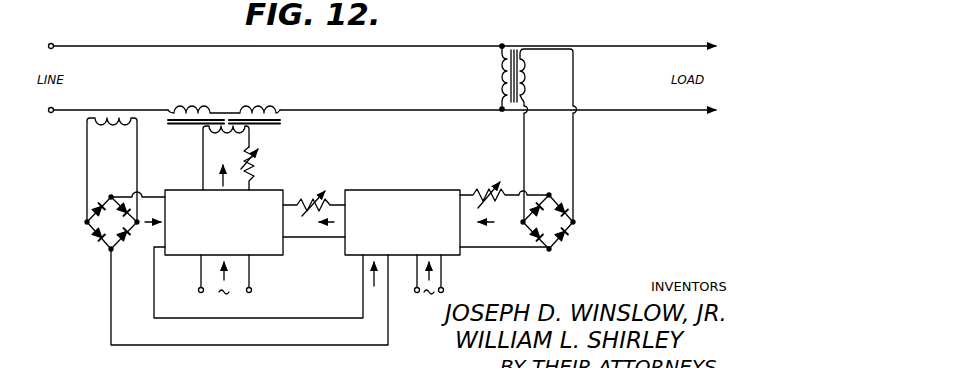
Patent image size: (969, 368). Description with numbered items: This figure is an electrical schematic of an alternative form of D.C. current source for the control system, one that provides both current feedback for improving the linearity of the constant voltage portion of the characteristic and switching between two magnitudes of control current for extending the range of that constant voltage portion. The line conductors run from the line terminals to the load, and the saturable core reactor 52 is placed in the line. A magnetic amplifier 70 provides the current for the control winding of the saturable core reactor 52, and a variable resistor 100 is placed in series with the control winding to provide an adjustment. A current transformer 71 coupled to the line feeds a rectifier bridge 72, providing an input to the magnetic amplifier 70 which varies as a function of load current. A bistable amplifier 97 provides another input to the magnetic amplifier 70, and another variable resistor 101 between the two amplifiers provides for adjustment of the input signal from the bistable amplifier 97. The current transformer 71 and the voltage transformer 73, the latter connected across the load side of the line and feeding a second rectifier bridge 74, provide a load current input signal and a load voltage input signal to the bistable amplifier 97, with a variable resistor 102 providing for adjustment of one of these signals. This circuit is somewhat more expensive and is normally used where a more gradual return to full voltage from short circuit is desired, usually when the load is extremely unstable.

The saturable core reactor 52 is at (228, 112).
The magnetic amplifier 70 is at (186, 247).
The current transformer 71 is at (95, 127).
The rectifier bridge 72 is at (92, 231).
The voltage transformer 73 is at (499, 66).
The rectifier bridge 74 is at (568, 226).
The bistable amplifier 97 is at (358, 255).
The variable resistor 100 is at (258, 163).
The variable resistor 101 is at (310, 191).
The variable resistor 102 is at (489, 157).